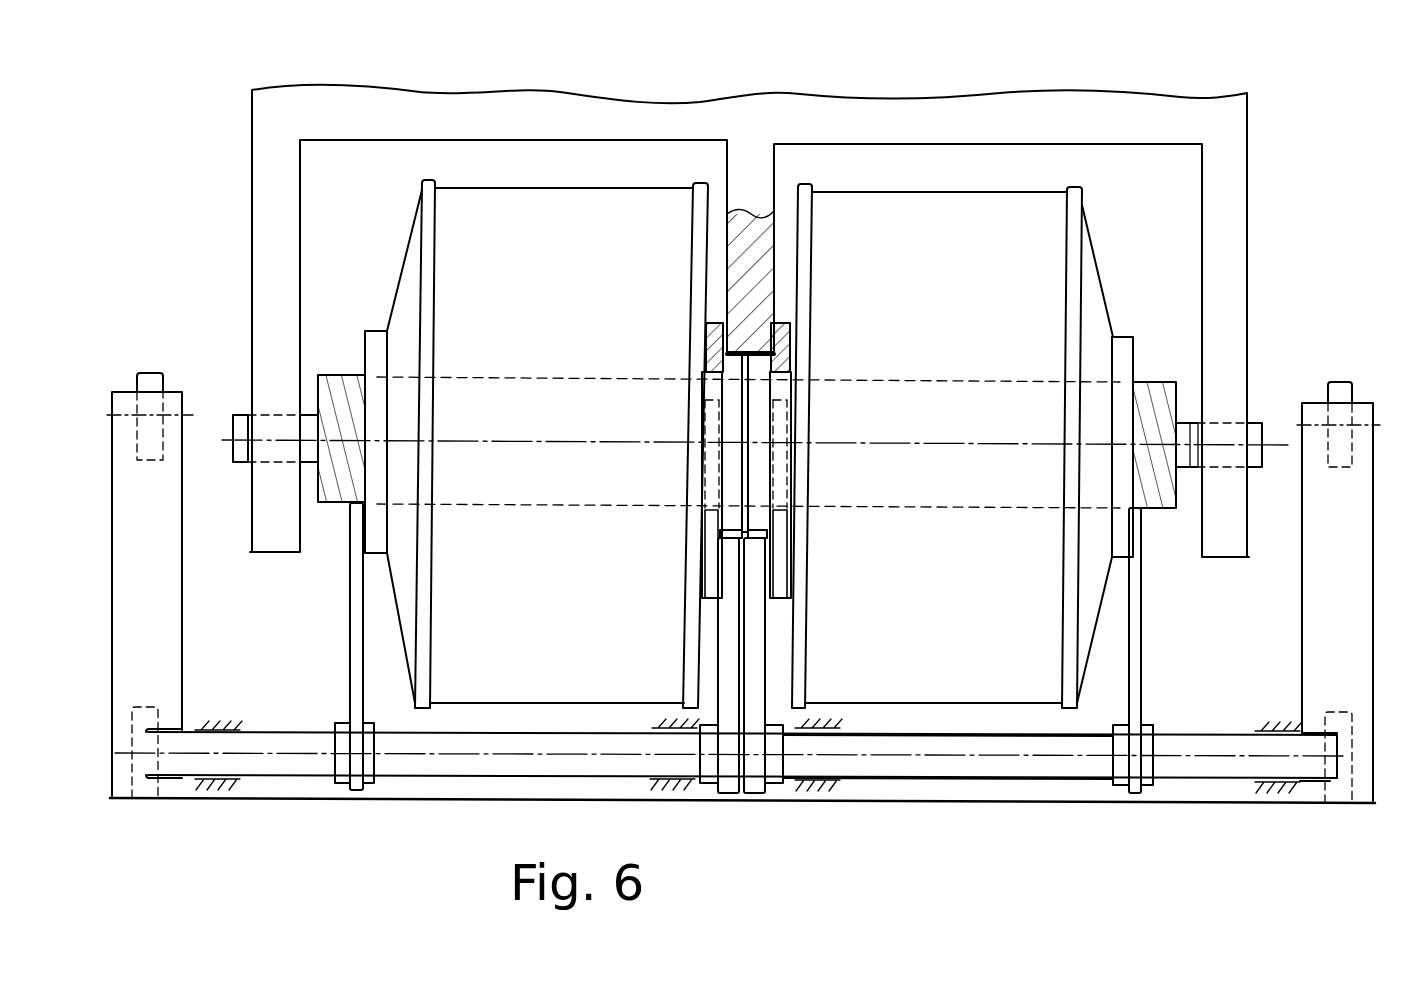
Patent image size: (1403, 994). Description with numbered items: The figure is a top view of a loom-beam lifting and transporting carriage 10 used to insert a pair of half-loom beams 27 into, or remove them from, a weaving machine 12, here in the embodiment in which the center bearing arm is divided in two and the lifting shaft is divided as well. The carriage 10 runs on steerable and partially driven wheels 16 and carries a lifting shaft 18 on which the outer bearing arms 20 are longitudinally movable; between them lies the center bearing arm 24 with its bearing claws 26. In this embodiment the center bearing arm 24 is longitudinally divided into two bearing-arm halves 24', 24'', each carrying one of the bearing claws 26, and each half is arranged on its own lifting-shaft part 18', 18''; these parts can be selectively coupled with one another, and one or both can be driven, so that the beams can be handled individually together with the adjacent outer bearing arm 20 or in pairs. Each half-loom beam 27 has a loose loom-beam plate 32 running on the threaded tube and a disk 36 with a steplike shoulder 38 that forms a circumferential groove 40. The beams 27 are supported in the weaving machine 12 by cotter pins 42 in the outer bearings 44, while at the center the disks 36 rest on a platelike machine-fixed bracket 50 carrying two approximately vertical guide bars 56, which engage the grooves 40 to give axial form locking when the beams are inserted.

The loom-beam lifting and transporting carriage 10 is at (1328, 626).
The weaving machine 12 is at (1224, 192).
The wheels 16 is at (145, 380).
The lifting shaft 18 is at (733, 797).
The lifting-shaft part 18' is at (948, 811).
The lifting-shaft part 18'' is at (731, 788).
The outer bearing arm 20 is at (352, 640).
The center bearing arm 24 is at (829, 494).
The bearing-arm half 24' is at (833, 665).
The bearing-arm half 24'' is at (651, 665).
The bearing claws 26 is at (685, 480).
The half-loom beam 27 is at (553, 222).
The loose loom-beam plate 32 is at (1092, 308).
The disk 36 is at (737, 373).
The steplike shoulder 38 is at (781, 507).
The circumferential groove 40 is at (705, 528).
The cotter pins 42 is at (1280, 380).
The outer bearings 44 is at (1223, 457).
The machine-fixed bracket 50 is at (753, 270).
The guide bars 56 is at (708, 342).